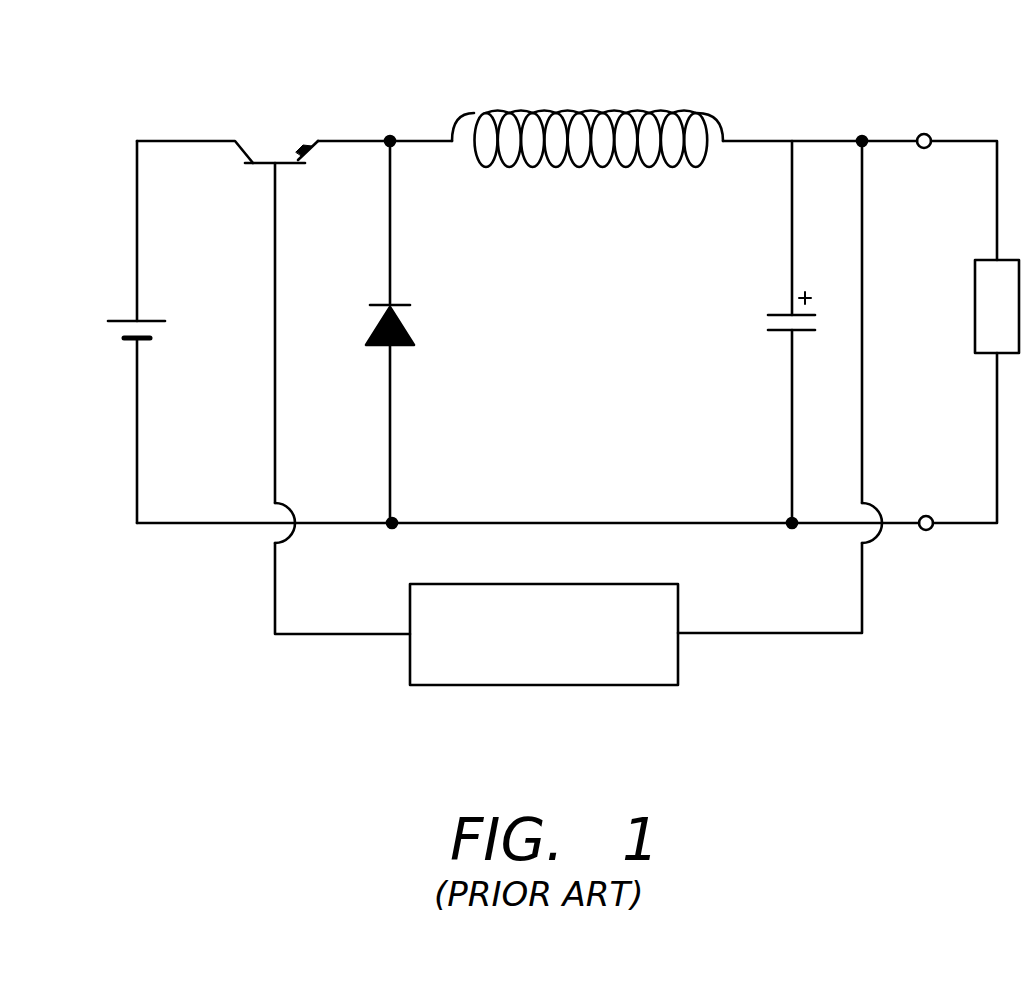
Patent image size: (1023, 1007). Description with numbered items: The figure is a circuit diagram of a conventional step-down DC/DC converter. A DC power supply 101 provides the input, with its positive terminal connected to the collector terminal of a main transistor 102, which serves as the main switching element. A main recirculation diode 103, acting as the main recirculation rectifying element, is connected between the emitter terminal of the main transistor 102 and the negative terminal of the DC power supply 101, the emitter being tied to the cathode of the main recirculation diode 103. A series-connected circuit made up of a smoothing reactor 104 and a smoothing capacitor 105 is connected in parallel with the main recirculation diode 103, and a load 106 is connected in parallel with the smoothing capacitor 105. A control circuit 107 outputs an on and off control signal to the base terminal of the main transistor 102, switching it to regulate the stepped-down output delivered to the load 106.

The DC power supply 101 is at (122, 320).
The main transistor 102 is at (270, 158).
The main recirculation diode 103 is at (405, 325).
The smoothing reactor 104 is at (590, 112).
The smoothing capacitor 105 is at (778, 312).
The load 106 is at (975, 290).
The control circuit 107 is at (565, 584).